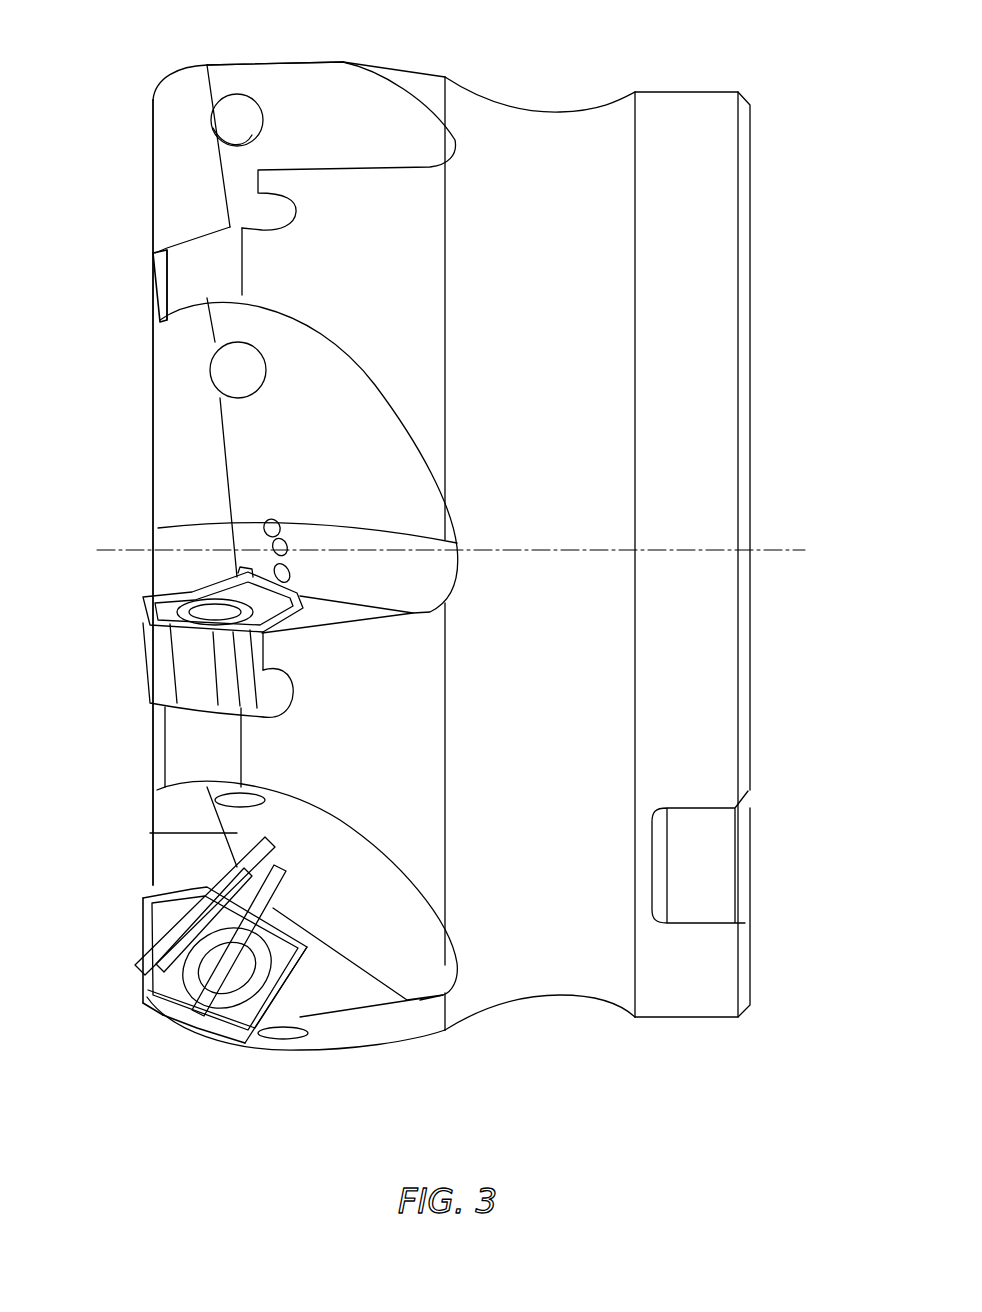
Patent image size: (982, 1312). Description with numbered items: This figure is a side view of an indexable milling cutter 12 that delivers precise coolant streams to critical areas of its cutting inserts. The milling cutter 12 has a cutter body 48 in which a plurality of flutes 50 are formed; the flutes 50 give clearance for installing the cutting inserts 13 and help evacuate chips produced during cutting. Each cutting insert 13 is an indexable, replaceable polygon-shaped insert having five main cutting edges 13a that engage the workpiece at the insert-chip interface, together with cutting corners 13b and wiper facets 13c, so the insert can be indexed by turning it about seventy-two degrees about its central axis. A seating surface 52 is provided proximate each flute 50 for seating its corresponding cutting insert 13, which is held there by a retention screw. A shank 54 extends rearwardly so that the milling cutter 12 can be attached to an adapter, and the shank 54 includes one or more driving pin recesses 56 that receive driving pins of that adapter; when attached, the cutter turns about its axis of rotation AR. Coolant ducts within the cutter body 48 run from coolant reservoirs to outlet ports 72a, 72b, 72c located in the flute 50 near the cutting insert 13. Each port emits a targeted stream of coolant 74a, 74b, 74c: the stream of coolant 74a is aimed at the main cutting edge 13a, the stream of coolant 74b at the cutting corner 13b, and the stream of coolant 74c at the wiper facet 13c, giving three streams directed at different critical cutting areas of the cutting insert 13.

The milling cutter 12 is at (603, 55).
The cutting insert 13 is at (148, 272).
The main cutting edge 13a is at (170, 1017).
The cutting corner 13b is at (158, 998).
The wiper facet 13c is at (143, 977).
The cutter body 48 is at (344, 55).
The flute 50 is at (298, 97).
The seating surface 52 is at (162, 312).
The shank 54 is at (715, 92).
The driving pin recess 56 is at (722, 923).
The outlet port 72a is at (284, 564).
The outlet port 72b is at (281, 539).
The outlet port 72c is at (272, 520).
The stream of coolant 74a is at (273, 883).
The stream of coolant 74b is at (213, 927).
The stream of coolant 74c is at (173, 935).
The axis of rotation AR is at (765, 547).